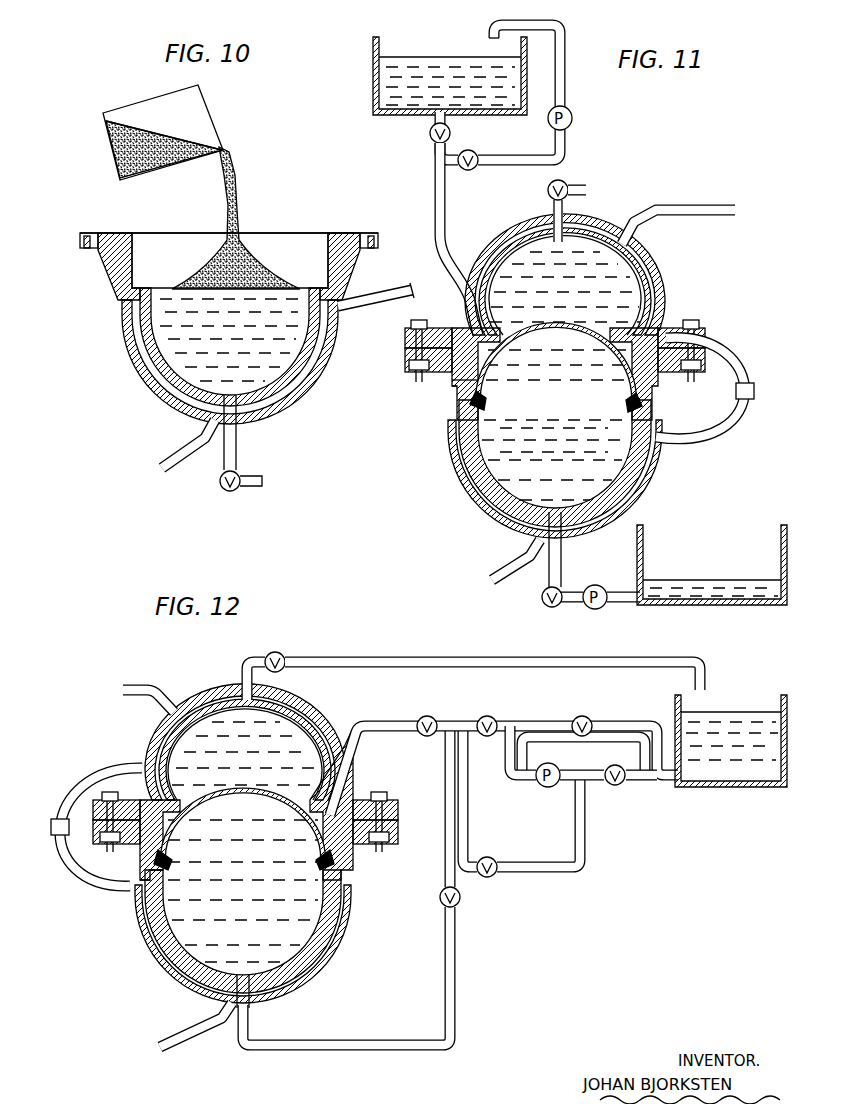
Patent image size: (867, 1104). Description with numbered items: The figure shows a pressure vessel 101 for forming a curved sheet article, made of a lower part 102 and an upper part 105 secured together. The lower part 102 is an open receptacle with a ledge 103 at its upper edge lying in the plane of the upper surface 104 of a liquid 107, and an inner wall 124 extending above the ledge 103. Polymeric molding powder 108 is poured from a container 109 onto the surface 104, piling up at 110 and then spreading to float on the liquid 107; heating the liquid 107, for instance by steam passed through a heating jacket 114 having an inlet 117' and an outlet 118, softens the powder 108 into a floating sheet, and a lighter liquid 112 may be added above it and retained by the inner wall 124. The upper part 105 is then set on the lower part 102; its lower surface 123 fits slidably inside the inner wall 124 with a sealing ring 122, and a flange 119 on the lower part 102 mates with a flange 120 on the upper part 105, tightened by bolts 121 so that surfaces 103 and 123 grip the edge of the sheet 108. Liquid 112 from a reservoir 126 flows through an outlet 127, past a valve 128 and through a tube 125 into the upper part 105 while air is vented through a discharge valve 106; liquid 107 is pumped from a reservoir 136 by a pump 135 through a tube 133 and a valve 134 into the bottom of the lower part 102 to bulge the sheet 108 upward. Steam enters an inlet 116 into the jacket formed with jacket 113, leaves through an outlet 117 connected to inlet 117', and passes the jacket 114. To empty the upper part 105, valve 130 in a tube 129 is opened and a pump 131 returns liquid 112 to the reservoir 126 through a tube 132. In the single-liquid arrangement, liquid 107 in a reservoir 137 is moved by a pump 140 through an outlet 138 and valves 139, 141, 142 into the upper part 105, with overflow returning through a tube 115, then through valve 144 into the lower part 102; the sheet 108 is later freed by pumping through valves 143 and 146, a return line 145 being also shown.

In FIG. 10, the vessel 101 is at (229, 362).
In FIG. 11, the vessel 101 is at (350, 424).
In FIG. 12, the vessel 101 is at (96, 676).
In FIG. 10, the lower part 102 is at (126, 292).
In FIG. 11, the lower part 102 is at (462, 440).
In FIG. 12, the lower part 102 is at (156, 950).
In FIG. 10, the ledge 103 is at (138, 288).
In FIG. 11, the ledge 103 is at (482, 412).
In FIG. 12, the ledge 103 is at (166, 868).
In FIG. 10, the upper surface of liquid 104 is at (310, 287).
In FIG. 11, the upper part 105 is at (632, 262).
In FIG. 12, the upper part 105 is at (232, 700).
In FIG. 11, the discharge valve 106 is at (570, 186).
In FIG. 12, the discharge valve 106 is at (280, 655).
In FIG. 10, the liquid 107 is at (186, 355).
In FIG. 11, the liquid 107 is at (500, 468).
In FIG. 12, the liquid 107 is at (272, 730).
In FIG. 10, the polymeric molding powder 108 is at (176, 133).
In FIG. 11, the polymeric molding powder 108 is at (556, 362).
In FIG. 12, the polymeric molding powder 108 is at (184, 850).
In FIG. 10, the container 109 is at (150, 101).
In FIG. 10, the pile of material 110 is at (240, 249).
In FIG. 11, the liquid 112 is at (376, 70).
In FIG. 11, the jacket 113 is at (650, 302).
In FIG. 12, the jacket 113 is at (194, 702).
In FIG. 10, the heating jacket 114 is at (180, 400).
In FIG. 11, the heating jacket 114 is at (478, 510).
In FIG. 12, the heating jacket 114 is at (142, 926).
In FIG. 12, the tube 115 is at (446, 660).
In FIG. 11, the inlet 116 is at (702, 208).
In FIG. 12, the inlet 116 is at (147, 696).
In FIG. 11, the outlet 117 is at (714, 372).
In FIG. 12, the outlet 117 is at (101, 808).
In FIG. 10, the inlet 117' is at (376, 285).
In FIG. 11, the inlet 117' is at (764, 387).
In FIG. 12, the inlet 117' is at (68, 858).
In FIG. 10, the outlet 118 is at (190, 452).
In FIG. 11, the outlet 118 is at (492, 556).
In FIG. 12, the outlet 118 is at (190, 1026).
In FIG. 11, the flange 119 is at (405, 364).
In FIG. 12, the flange 119 is at (92, 832).
In FIG. 11, the flange 120 is at (405, 342).
In FIG. 12, the flange 120 is at (96, 806).
In FIG. 11, the bolts 121 is at (408, 330).
In FIG. 12, the bolts 121 is at (100, 798).
In FIG. 11, the sealing ring 122 is at (450, 388).
In FIG. 11, the surface 123 is at (450, 410).
In FIG. 12, the surface 123 is at (150, 888).
In FIG. 10, the inner wall 124 is at (330, 246).
In FIG. 11, the inner wall 124 is at (482, 394).
In FIG. 11, the tube 125 is at (470, 252).
In FIG. 12, the tube 125 is at (350, 790).
In FIG. 11, the reservoir 126 is at (376, 110).
In FIG. 11, the outlet 127 is at (434, 123).
In FIG. 11, the valve 128 is at (432, 141).
In FIG. 11, the tube 129 is at (452, 166).
In FIG. 11, the valve 130 is at (478, 167).
In FIG. 11, the pump 131 is at (573, 116).
In FIG. 11, the tube 132 is at (490, 26).
In FIG. 11, the tube 133 is at (561, 568).
In FIG. 11, the valve 134 is at (540, 597).
In FIG. 11, the pump 135 is at (600, 609).
In FIG. 11, the reservoir 136 is at (702, 607).
In FIG. 12, the reservoir 137 is at (748, 790).
In FIG. 12, the outlet 138 is at (664, 782).
In FIG. 12, the valve 139 is at (616, 786).
In FIG. 12, the pump 140 is at (550, 788).
In FIG. 12, the valve 141 is at (494, 716).
In FIG. 12, the valve 142 is at (432, 716).
In FIG. 12, the valve 143 is at (492, 876).
In FIG. 12, the valve 144 is at (462, 902).
In FIG. 12, the return pipe 145 is at (318, 1048).
In FIG. 12, the valve 146 is at (588, 716).